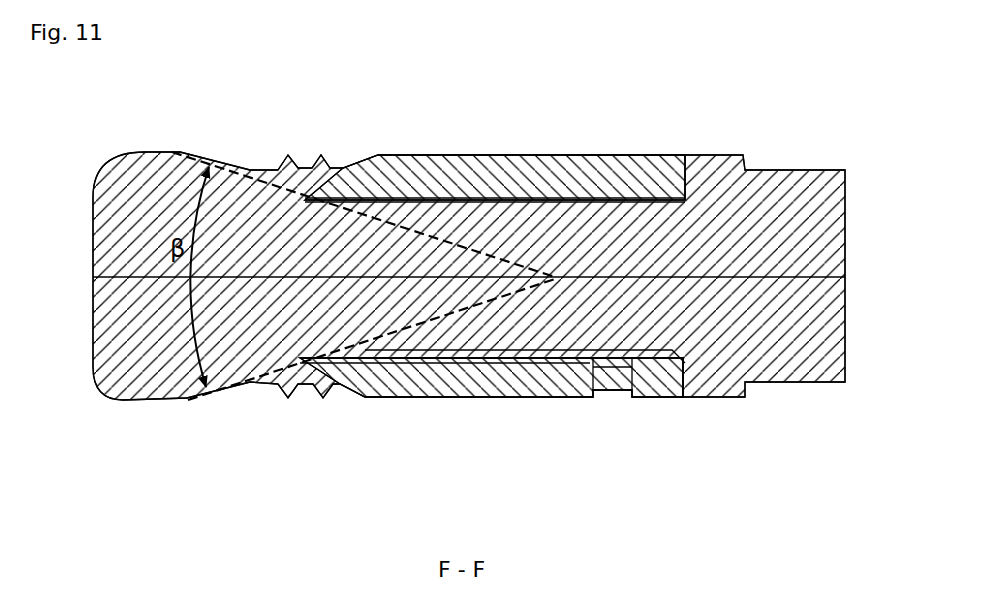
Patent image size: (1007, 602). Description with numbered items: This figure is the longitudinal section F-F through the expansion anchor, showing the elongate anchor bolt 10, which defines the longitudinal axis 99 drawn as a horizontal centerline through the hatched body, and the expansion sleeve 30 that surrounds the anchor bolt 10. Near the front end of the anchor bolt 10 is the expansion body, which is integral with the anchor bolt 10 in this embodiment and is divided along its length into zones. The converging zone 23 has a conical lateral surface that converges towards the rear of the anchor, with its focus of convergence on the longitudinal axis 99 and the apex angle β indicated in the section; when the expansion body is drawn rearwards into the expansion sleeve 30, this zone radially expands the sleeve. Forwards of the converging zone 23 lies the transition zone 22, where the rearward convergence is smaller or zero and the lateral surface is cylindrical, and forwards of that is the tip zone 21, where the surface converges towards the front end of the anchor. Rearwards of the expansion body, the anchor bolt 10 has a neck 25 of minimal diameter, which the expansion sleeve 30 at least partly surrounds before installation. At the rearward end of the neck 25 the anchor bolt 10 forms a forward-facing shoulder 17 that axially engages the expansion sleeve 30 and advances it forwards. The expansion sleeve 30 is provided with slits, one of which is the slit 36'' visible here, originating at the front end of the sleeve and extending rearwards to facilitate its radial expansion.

The anchor bolt 10 is at (697, 240).
The shoulder 17 is at (675, 368).
The tip zone 21 is at (95, 432).
The transition zone 22 is at (153, 436).
The converging zone 23 is at (275, 422).
The neck 25 is at (440, 398).
The expansion sleeve 30 is at (535, 163).
The slit 36'' is at (525, 356).
The longitudinal axis 99 is at (773, 275).